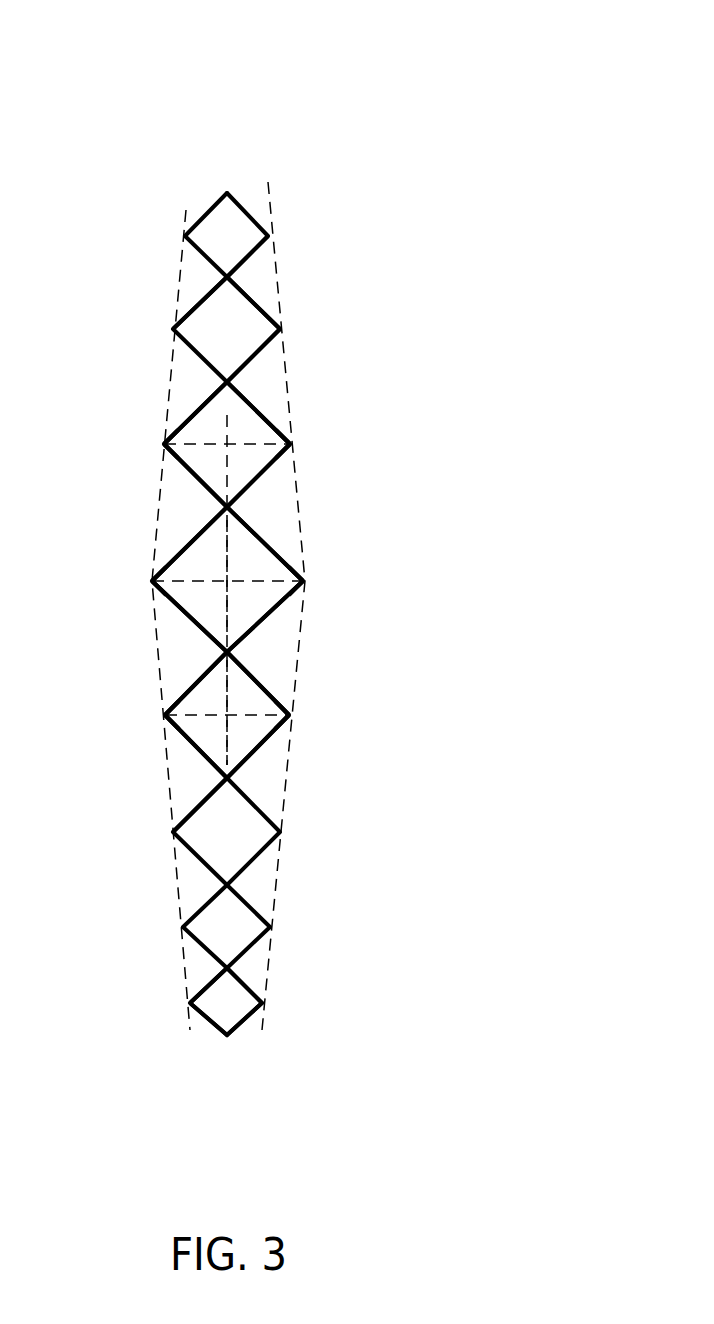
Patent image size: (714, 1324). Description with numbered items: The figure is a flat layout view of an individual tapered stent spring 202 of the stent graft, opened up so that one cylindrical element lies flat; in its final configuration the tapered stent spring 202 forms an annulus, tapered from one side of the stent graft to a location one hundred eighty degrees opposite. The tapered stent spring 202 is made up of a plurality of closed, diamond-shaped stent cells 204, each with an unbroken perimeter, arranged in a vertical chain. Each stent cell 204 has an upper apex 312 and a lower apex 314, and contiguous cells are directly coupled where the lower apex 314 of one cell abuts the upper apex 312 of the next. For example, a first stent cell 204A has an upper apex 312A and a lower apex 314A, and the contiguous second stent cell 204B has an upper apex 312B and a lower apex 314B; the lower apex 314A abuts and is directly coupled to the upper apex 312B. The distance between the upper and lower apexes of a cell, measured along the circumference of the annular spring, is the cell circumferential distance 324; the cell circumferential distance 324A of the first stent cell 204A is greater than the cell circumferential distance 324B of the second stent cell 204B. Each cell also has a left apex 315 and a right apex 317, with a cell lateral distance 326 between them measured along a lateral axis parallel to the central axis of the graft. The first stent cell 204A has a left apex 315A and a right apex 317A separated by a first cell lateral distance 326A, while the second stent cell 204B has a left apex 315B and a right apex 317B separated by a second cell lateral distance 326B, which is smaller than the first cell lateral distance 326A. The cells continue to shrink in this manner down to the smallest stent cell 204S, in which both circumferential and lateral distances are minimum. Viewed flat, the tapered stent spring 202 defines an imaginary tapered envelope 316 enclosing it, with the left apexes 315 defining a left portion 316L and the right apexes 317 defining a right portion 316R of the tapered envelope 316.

The tapered stent spring 202 is at (247, 112).
The tapered envelope 316 is at (239, 569).
The left portion of tapered envelope 316L is at (187, 270).
The right portion of tapered envelope 316R is at (277, 258).
The upper apexes 312 is at (210, 302).
The lower apexes 314 is at (268, 238).
The stent cells 204 is at (248, 294).
The left apexes 315 is at (162, 445).
The right apexes 317 is at (292, 445).
The cell lateral distances 326 is at (188, 468).
The cell circumferential distances 324 is at (278, 456).
The first stent cell 204A is at (180, 550).
The upper apex of first stent cell 312A is at (253, 532).
The left apex of first stent cell 315A is at (152, 581).
The cell circumferential distance of first stent cell 324A is at (228, 563).
The right apex of first stent cell 317A is at (303, 581).
The first cell lateral distance 326A is at (267, 583).
The lower apex of first stent cell 314A is at (195, 622).
The second stent cell 204B is at (185, 692).
The upper apex of second stent cell 312B is at (250, 675).
The left apex of second stent cell 315B is at (165, 715).
The cell circumferential distance of second stent cell 324B is at (228, 700).
The right apex of second stent cell 317B is at (289, 715).
The second cell lateral distance 326B is at (255, 718).
The lower apex of second stent cell 314B is at (245, 762).
The smallest stent cell 204S is at (235, 1002).